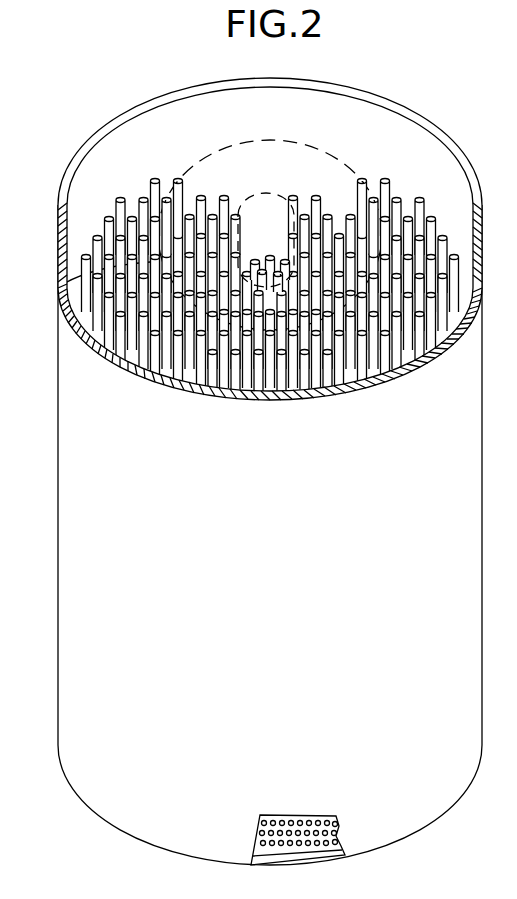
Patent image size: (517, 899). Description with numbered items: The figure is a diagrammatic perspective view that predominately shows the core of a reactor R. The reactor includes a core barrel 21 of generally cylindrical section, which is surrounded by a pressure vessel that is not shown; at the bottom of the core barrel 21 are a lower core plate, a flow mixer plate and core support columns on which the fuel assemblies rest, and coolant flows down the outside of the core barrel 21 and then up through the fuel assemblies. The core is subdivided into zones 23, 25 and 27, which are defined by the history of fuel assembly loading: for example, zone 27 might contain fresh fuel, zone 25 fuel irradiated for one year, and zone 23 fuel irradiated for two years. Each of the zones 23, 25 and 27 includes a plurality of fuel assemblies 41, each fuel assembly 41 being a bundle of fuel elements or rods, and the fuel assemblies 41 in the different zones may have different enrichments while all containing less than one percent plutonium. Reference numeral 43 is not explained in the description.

The zone 23 is at (276, 237).
The zone 25 is at (350, 211).
The zone 27 is at (423, 212).
The tube 43 is at (435, 214).
The fuel assembly 41 is at (59, 288).
The core barrel 21 is at (60, 350).
The reactor R is at (252, 535).